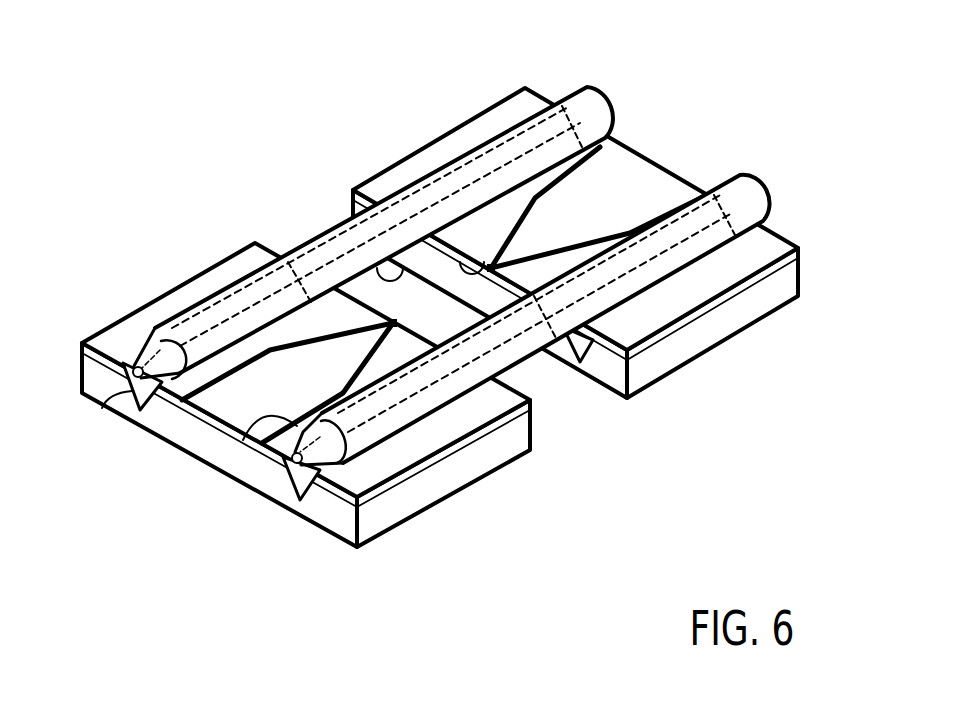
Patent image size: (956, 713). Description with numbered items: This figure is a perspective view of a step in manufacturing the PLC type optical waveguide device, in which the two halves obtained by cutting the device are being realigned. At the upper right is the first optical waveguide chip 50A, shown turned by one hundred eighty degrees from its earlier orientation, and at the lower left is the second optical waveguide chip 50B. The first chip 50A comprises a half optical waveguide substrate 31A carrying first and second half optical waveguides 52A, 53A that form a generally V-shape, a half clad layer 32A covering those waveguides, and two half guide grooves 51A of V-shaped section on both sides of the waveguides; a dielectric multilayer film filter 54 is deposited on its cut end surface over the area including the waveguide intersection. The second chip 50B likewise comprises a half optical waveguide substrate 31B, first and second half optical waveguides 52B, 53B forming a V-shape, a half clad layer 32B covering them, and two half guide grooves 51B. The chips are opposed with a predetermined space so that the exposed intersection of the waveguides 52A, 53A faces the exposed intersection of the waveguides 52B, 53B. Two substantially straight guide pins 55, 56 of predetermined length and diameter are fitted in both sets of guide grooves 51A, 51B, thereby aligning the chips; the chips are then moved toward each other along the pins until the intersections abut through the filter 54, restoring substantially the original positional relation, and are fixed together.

The half optical waveguide substrate 31A is at (700, 330).
The half optical waveguide substrate 31B is at (423, 487).
The half clad layer 32A is at (462, 142).
The half clad layer 32B is at (153, 323).
The first optical waveguide chip 50A is at (614, 252).
The second optical waveguide chip 50B is at (312, 429).
The half guide grooves 51A is at (580, 330).
The half guide grooves 51B is at (143, 392).
The first half optical waveguide 52A is at (655, 208).
The first half optical waveguide 52B is at (188, 398).
The second half optical waveguide 53A is at (643, 180).
The second half optical waveguide 53B is at (222, 452).
The dielectric multilayer film filter 54 is at (460, 262).
The guide pin 55 is at (589, 110).
The guide pin 56 is at (760, 185).